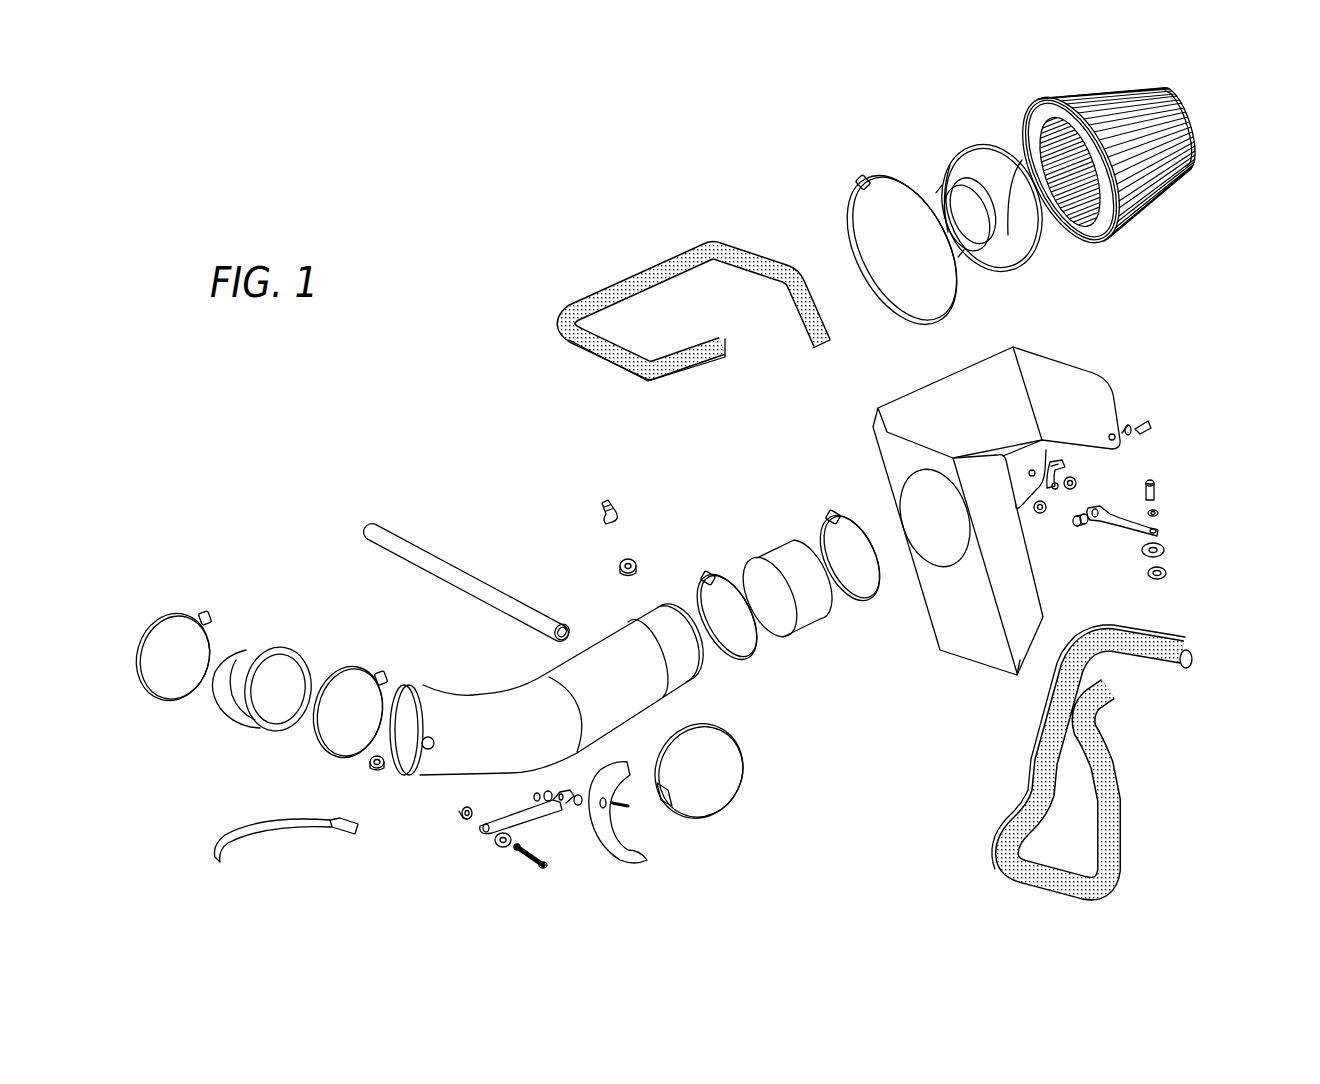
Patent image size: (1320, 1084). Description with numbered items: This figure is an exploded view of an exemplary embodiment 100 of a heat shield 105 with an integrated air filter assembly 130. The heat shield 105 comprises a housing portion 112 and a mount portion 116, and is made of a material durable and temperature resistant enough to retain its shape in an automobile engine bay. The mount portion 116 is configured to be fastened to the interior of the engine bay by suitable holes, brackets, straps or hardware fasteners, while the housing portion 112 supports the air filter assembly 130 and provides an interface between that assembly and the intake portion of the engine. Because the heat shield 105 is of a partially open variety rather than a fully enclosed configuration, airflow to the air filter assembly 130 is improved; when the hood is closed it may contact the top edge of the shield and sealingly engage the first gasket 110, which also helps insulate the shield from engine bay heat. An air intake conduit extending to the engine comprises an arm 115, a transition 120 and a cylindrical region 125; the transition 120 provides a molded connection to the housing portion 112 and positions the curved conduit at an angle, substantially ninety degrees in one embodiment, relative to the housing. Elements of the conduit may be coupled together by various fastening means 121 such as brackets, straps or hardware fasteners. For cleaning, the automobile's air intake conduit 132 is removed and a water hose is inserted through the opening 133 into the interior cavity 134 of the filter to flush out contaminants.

The exemplary embodiment 100 is at (718, 170).
The heat shield 105 is at (1105, 410).
The first gasket 110 is at (630, 277).
The housing portion 112 is at (988, 370).
The arm 115 is at (230, 710).
The mount portion 116 is at (1163, 518).
The transition 120 is at (440, 757).
The fastening means 121 is at (316, 733).
The cylindrical region 125 is at (648, 618).
The air filter assembly 130 is at (956, 110).
The air intake conduit 132 is at (1080, 108).
The opening 133 is at (1165, 85).
The interior cavity 134 is at (1082, 196).